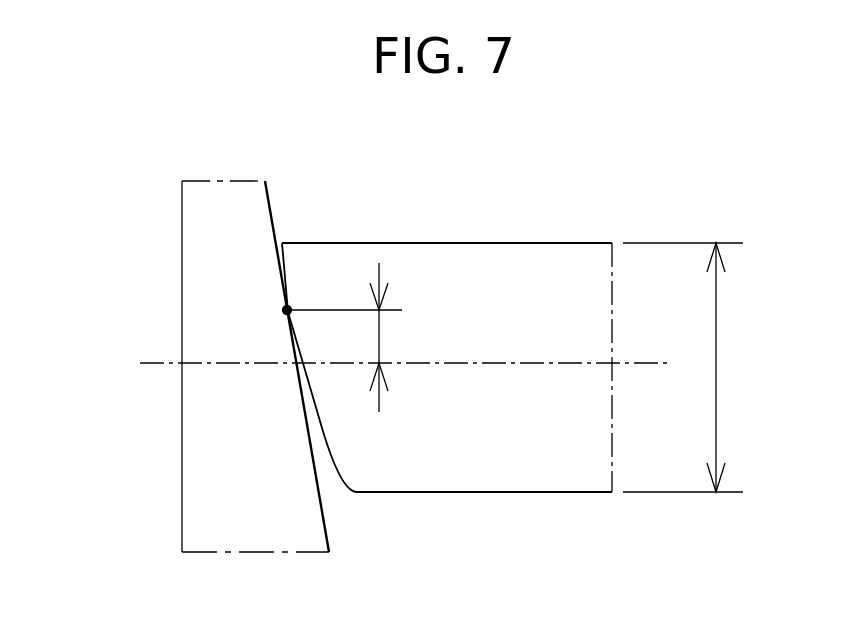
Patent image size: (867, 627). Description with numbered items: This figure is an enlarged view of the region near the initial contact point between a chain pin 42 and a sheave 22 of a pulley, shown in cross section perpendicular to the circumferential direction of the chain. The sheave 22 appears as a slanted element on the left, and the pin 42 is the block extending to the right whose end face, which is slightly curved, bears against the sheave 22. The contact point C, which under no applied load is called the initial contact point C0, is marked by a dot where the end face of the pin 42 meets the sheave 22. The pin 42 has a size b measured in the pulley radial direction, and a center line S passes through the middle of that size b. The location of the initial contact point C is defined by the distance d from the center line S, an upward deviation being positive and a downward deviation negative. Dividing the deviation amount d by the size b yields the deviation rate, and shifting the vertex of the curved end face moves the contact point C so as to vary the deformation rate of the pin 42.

The sheave 22 is at (253, 217).
The pin 42 is at (507, 267).
The contact point C is at (283, 310).
The center line S is at (235, 365).
The distance d is at (388, 337).
The size b is at (683, 367).